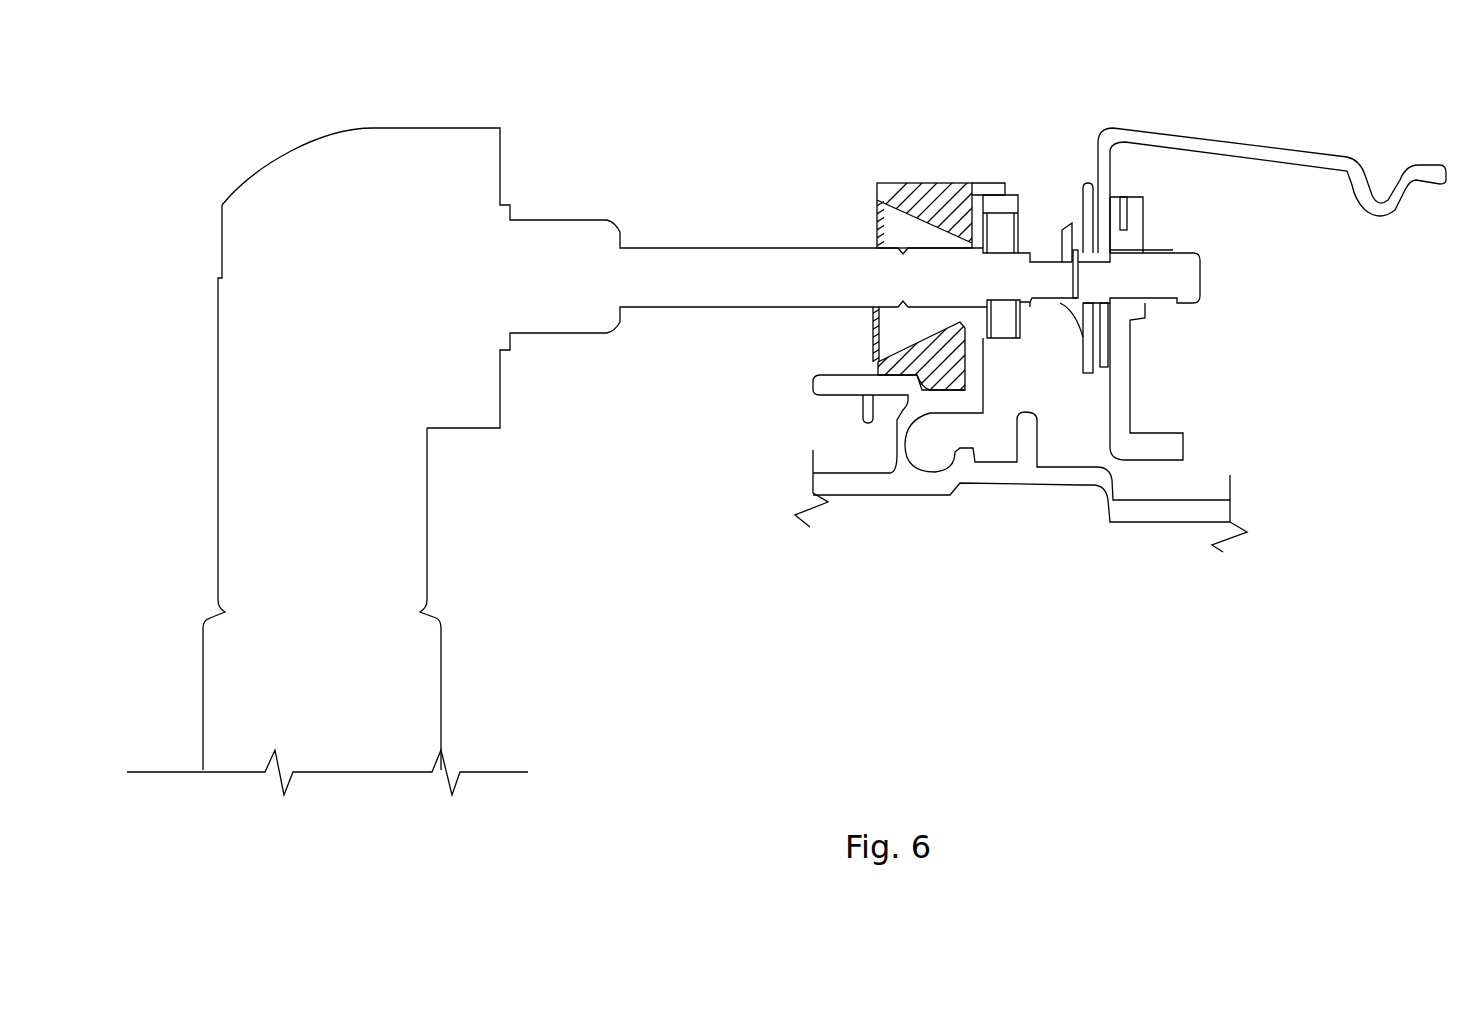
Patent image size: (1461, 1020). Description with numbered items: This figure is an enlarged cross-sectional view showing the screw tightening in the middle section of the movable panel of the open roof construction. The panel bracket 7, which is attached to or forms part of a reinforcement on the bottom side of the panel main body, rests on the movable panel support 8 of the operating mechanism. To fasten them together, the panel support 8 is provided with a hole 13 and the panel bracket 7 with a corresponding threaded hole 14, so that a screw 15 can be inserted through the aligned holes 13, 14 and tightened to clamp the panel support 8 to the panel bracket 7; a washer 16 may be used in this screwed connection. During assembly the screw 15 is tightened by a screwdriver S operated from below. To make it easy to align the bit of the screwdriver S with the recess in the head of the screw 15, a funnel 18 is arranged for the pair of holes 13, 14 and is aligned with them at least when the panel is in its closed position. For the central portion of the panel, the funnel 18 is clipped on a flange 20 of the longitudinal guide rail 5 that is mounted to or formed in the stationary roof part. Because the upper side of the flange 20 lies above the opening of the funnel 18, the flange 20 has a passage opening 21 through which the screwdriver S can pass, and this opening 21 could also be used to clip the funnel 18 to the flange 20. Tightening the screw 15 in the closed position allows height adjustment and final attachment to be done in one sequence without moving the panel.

The screwdriver S is at (444, 259).
The funnel 18 is at (925, 200).
The flange 20 is at (998, 207).
The passage opening 21 is at (1003, 240).
The screw 15 is at (1085, 270).
The washer 16 is at (1088, 207).
The panel support 8 is at (1120, 232).
The threaded hole 14 is at (1125, 255).
The panel bracket 7 is at (1242, 150).
The hole 13 is at (1103, 327).
The guide rail 5 is at (1052, 482).